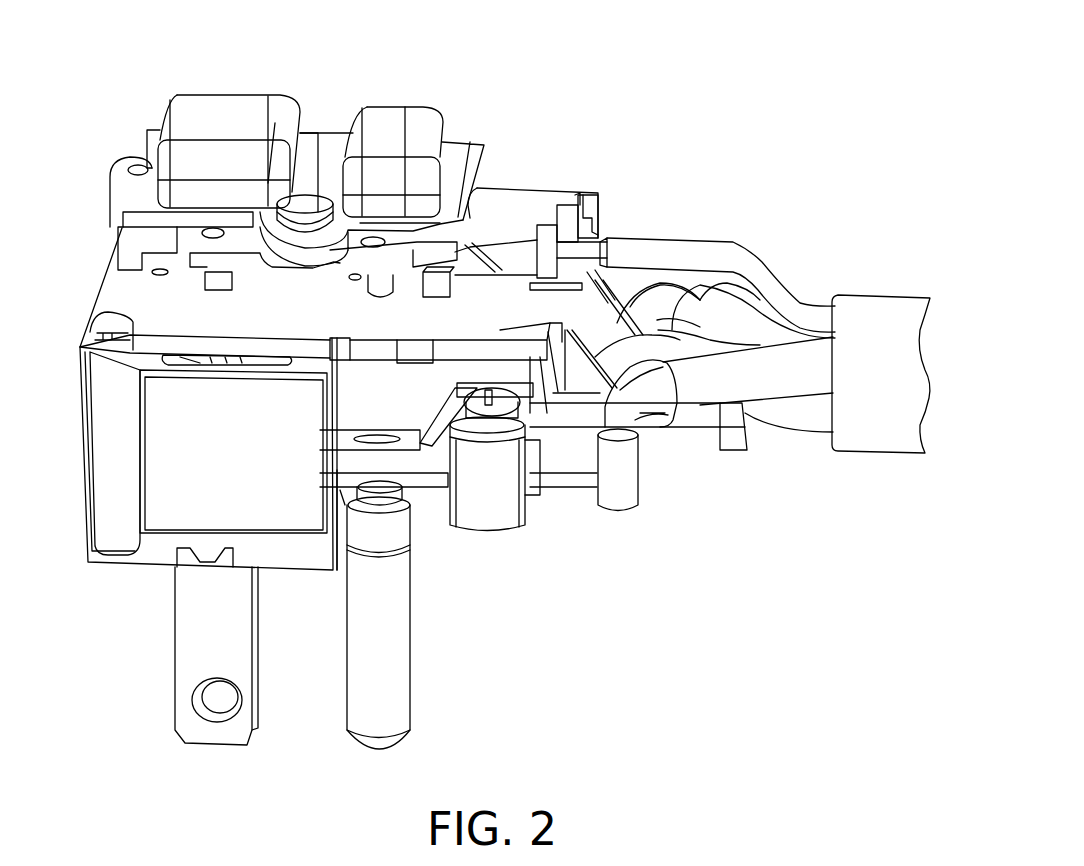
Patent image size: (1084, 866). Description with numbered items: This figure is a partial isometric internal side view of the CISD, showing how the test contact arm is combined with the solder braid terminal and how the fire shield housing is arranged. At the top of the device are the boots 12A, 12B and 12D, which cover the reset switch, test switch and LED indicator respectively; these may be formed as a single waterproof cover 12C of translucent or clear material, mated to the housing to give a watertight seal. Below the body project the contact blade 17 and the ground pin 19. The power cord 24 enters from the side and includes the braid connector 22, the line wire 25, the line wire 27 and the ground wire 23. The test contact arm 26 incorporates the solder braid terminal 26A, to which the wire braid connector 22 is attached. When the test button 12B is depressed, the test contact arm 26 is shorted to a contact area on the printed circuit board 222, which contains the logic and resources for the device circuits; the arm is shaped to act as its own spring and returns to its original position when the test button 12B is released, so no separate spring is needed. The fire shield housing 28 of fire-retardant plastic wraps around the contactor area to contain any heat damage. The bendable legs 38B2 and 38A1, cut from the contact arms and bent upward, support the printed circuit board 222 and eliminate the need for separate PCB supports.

The boot 12A is at (230, 97).
The test button 12B is at (397, 107).
The waterproof cover 12C is at (318, 147).
The boot 12D is at (323, 207).
The contact blade 17 is at (185, 698).
The ground pin 19 is at (398, 657).
The wire braid connector 22 is at (703, 247).
The ground wire 23 is at (788, 427).
The power cord 24 is at (885, 295).
The line wire 25 is at (722, 405).
The test contact arm 26 is at (473, 262).
The solder braid terminal 26A is at (595, 227).
The line wire 27 is at (750, 308).
The fire shield housing 28 is at (83, 510).
The printed circuit board 222 is at (93, 322).
The bendable leg cutout 38A1 is at (515, 303).
The bendable leg cutout 38B2 is at (575, 203).